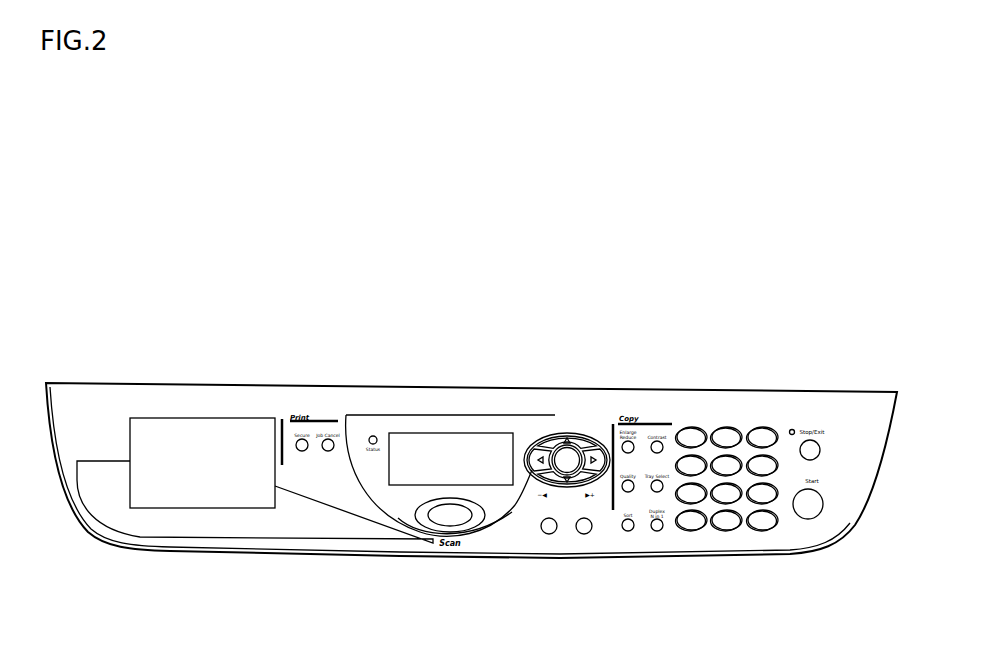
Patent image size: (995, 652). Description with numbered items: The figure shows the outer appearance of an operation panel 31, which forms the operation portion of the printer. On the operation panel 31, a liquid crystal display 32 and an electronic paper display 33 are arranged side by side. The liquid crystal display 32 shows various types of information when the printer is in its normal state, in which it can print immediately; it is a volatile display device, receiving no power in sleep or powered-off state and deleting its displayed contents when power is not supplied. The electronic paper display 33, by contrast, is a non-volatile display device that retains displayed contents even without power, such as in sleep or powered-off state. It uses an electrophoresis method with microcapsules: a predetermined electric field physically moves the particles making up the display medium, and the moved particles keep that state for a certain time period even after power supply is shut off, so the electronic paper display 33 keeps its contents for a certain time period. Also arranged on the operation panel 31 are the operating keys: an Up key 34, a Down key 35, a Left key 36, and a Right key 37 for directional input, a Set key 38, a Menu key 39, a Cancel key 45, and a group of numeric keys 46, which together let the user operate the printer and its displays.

The operation panel 31 is at (502, 394).
The liquid crystal display 32 is at (423, 455).
The electronic paper display 33 is at (268, 433).
The Up key 34 is at (580, 434).
The Down key 35 is at (572, 483).
The Left key 36 is at (537, 468).
The Right key 37 is at (594, 473).
The Set key 38 is at (565, 452).
The Menu key 39 is at (584, 534).
The Cancel key 45 is at (549, 534).
The numeric keys 46 is at (677, 533).